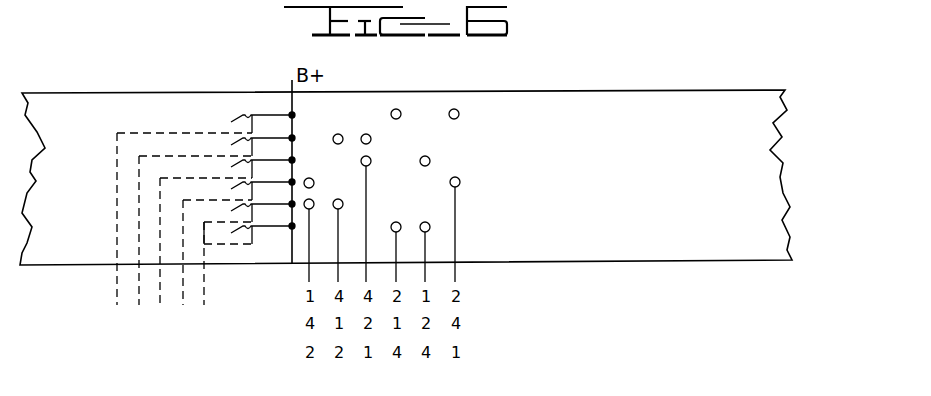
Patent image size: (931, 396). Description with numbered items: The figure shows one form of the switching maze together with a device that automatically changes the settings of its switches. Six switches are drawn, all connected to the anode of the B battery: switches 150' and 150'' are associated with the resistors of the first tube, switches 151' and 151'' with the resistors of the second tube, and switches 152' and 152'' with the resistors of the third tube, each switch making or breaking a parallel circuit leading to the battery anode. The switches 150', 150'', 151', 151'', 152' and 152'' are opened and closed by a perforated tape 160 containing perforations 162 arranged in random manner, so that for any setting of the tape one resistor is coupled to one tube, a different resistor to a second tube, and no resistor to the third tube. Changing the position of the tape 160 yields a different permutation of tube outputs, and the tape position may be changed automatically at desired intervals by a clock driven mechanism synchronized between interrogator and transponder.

The switch 150' is at (206, 207).
The switch 150'' is at (217, 219).
The switch 151' is at (227, 230).
The switch 151'' is at (239, 241).
The switch 152' is at (246, 252).
The switch 152'' is at (249, 232).
The perforated tape 160 is at (569, 90).
The perforations 162 is at (455, 108).